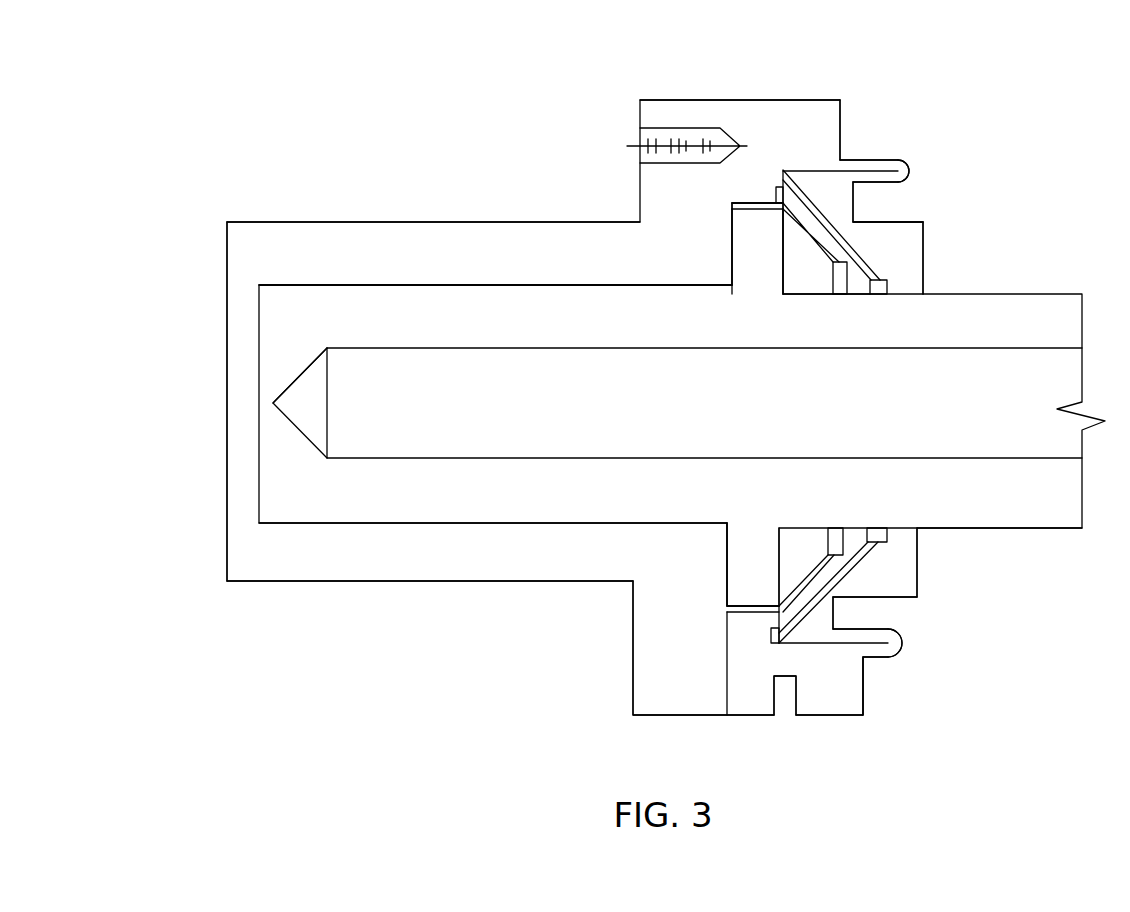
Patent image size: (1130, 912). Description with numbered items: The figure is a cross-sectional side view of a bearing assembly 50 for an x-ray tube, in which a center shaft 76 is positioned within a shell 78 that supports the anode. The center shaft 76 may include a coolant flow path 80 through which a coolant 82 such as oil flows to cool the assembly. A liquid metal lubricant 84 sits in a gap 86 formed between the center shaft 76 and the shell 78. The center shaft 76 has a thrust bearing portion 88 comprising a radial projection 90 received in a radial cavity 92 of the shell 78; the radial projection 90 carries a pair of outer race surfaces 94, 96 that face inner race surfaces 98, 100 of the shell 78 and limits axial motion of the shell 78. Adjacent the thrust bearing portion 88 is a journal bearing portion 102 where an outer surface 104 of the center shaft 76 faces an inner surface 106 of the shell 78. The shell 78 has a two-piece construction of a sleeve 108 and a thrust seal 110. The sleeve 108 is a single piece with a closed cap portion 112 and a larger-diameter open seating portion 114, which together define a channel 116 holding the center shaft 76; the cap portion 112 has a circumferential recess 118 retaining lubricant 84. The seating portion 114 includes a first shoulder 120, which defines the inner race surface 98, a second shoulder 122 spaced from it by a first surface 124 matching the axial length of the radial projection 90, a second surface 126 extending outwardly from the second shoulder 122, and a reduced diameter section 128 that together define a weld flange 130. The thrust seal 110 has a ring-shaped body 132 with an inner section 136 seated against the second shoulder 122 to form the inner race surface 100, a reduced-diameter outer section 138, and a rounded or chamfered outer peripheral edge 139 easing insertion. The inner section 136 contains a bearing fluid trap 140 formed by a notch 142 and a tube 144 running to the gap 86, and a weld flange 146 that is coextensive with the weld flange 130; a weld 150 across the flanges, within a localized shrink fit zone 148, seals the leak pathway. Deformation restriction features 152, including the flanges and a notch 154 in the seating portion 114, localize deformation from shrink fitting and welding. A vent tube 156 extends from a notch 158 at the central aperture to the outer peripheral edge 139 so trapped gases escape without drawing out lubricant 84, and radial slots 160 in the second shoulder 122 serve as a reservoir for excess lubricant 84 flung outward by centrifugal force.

The bearing assembly 50 is at (147, 614).
The center shaft 76 is at (275, 362).
The shell 78 is at (413, 619).
The coolant flow path 80 is at (283, 413).
The coolant 82 is at (383, 420).
The lubricant 84 is at (482, 285).
The gap 86 is at (365, 285).
The thrust bearing portion 88 is at (715, 566).
The radial projection 90 is at (732, 232).
The radial cavity 92 is at (770, 632).
The outer race surface 94 is at (776, 206).
The outer race surface 96 is at (779, 253).
The inner race surface 98 is at (732, 258).
The inner race surface 100 is at (790, 258).
The journal bearing portion 102 is at (750, 598).
The outer surface 104 is at (769, 600).
The inner surface 106 is at (777, 642).
The sleeve 108 is at (313, 590).
The thrust seal 110 is at (940, 248).
The cap portion 112 is at (341, 214).
The seating portion 114 is at (677, 92).
The channel 116 is at (415, 285).
The circumferential recess 118 is at (727, 609).
The first shoulder 120 is at (730, 265).
The second shoulder 122 is at (780, 176).
The first surface 124 is at (730, 201).
The second surface 126 is at (815, 165).
The reduced diameter section 128 is at (842, 112).
The weld flange 130 is at (893, 166).
The body 132 is at (938, 205).
The inner section 136 is at (842, 648).
The outer section 138 is at (918, 553).
The outer peripheral edge 139 is at (832, 650).
The bearing fluid trap 140 is at (845, 294).
The notch 142 is at (838, 306).
The tube 144 is at (836, 290).
The weld flange 146 is at (867, 184).
The localized shrink fit zone 148 is at (848, 153).
The weld 150 is at (908, 170).
The deformation restriction feature 152 is at (867, 663).
The notch 154 is at (782, 710).
The vent tube 156 is at (878, 523).
The notch 158 is at (843, 577).
The radial slot 160 is at (775, 193).